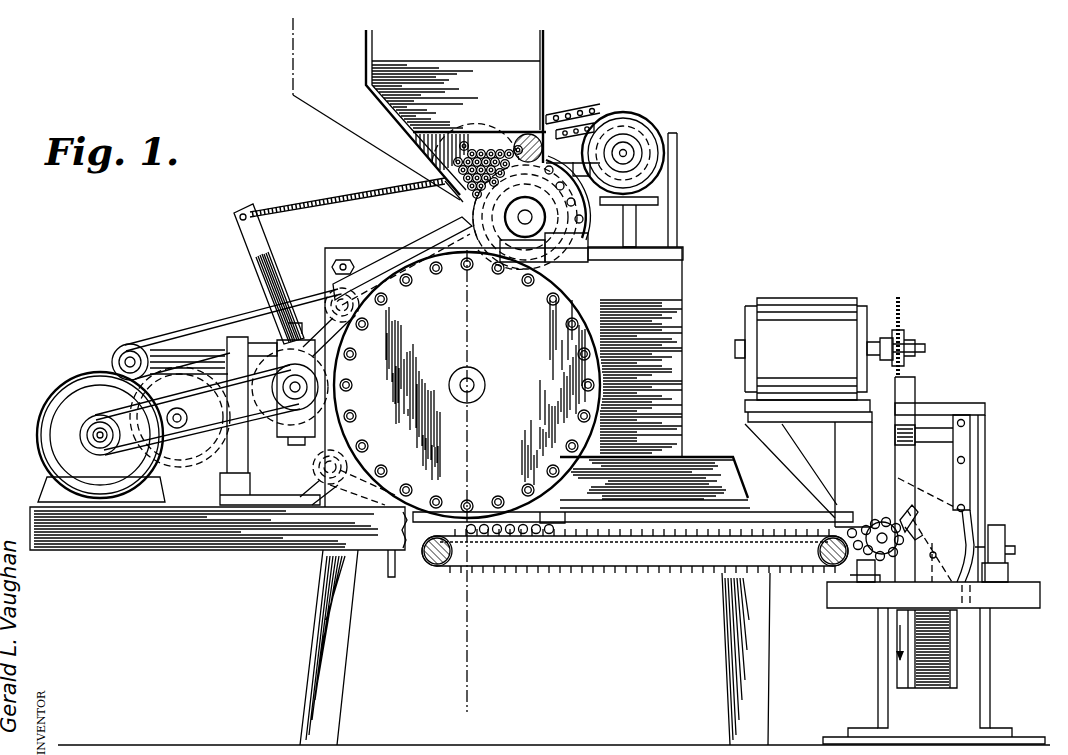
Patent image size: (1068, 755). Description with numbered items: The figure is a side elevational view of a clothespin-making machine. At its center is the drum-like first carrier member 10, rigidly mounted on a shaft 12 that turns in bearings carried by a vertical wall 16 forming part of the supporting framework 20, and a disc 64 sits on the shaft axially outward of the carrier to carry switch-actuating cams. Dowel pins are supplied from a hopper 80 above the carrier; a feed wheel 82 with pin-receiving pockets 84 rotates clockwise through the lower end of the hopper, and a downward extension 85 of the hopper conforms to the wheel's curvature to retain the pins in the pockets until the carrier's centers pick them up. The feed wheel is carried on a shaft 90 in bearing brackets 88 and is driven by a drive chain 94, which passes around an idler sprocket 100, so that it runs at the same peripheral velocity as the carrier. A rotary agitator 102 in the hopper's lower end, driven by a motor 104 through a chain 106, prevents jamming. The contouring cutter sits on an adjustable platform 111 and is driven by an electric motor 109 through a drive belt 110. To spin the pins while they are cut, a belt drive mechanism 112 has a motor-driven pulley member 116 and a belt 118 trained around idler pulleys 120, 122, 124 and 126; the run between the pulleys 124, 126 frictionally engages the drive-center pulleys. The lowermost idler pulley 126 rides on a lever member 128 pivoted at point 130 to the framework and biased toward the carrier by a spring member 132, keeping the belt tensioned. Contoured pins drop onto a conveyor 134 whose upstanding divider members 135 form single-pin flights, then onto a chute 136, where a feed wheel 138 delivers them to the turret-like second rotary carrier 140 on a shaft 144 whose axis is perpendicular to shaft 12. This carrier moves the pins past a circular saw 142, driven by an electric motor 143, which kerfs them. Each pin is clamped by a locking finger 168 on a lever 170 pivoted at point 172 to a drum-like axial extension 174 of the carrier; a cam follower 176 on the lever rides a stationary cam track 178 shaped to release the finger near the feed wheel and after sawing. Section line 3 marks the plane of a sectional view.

The section line 3- 3 is at (318, 31).
The first carrier member 10 is at (596, 352).
The shaft 12 is at (474, 385).
The vertical wall 16 is at (645, 402).
The supporting framework 20 is at (356, 600).
The disc 64 is at (574, 312).
The hopper 80 is at (388, 112).
The feed wheel 82 is at (472, 214).
The pin-receiving pocket 84 is at (467, 240).
The downward extension 85 is at (550, 168).
The bearing bracket 88 is at (517, 250).
The shaft 90 is at (527, 217).
The drive chain 94 is at (556, 116).
The idler sprocket 100 is at (492, 110).
The rotary agitator 102 is at (528, 134).
The motor 104 is at (659, 138).
The chain 106 is at (588, 127).
The electric motor 109 is at (85, 373).
The drive belt 110 is at (180, 417).
The platform 111 is at (272, 440).
The belt drive mechanism 112 is at (163, 330).
The pulley member 116 is at (171, 407).
The belt 118 is at (207, 324).
The idler pulley 120 is at (128, 349).
The idler pulley 122 is at (122, 466).
The idler pulley 124 is at (332, 300).
The idler pulley 126 is at (320, 478).
The lever member 128 is at (257, 268).
The pivot point 130 is at (386, 486).
The spring member 132 is at (346, 197).
The conveyor 134 is at (636, 577).
The divider member 135 is at (580, 574).
The chute 136 is at (863, 584).
The feed wheel 138 is at (860, 534).
The second rotary carrier 140 is at (940, 689).
The circular saw 142 is at (903, 316).
The electric motor 143 is at (822, 300).
The shaft 144 is at (1012, 549).
The locking finger 168 is at (898, 518).
The lever 170 is at (938, 544).
The pivot point 172 is at (934, 560).
The axial extension 174 is at (944, 463).
The cam follower 176 is at (970, 507).
The cam track 178 is at (976, 520).